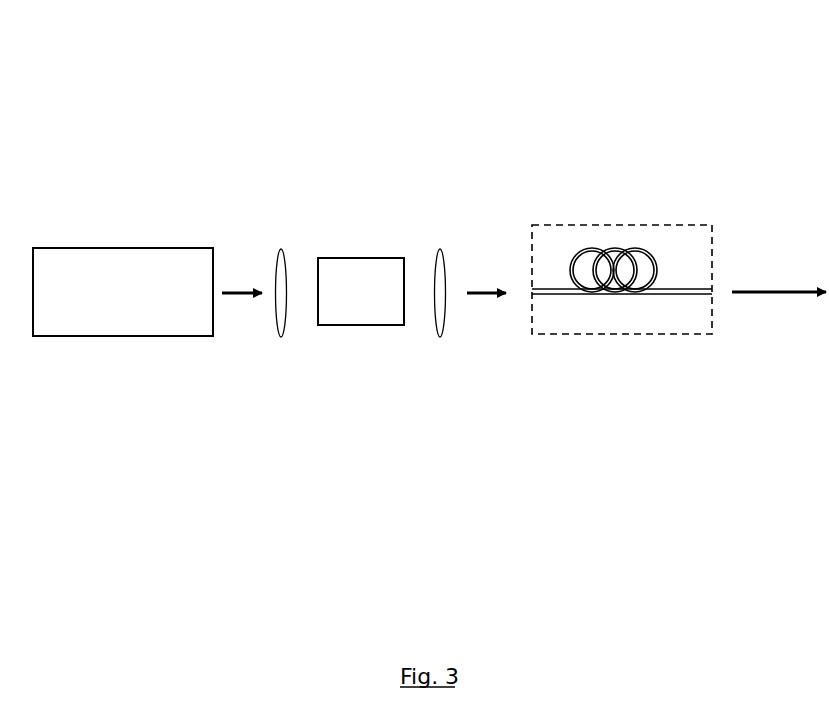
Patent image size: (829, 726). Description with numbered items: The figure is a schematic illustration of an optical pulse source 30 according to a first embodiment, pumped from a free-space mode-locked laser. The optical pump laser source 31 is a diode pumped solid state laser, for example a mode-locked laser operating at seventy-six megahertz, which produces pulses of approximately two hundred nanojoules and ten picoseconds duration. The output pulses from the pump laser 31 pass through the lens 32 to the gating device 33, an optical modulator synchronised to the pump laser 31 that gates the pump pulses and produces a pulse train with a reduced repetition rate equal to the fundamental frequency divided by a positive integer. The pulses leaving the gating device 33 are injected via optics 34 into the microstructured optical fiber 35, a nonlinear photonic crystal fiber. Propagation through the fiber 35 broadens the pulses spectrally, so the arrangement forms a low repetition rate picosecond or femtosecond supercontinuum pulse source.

The optical pulse source 30 is at (168, 84).
The optical pump laser source 31 is at (158, 246).
The lens 32 is at (280, 247).
The gating device 33 is at (355, 257).
The optics 34 is at (440, 247).
The microstructured optical fiber 35 is at (573, 250).